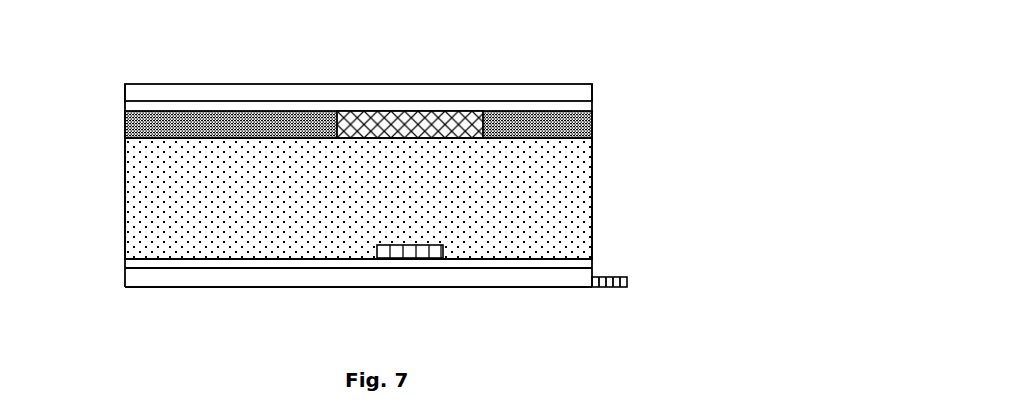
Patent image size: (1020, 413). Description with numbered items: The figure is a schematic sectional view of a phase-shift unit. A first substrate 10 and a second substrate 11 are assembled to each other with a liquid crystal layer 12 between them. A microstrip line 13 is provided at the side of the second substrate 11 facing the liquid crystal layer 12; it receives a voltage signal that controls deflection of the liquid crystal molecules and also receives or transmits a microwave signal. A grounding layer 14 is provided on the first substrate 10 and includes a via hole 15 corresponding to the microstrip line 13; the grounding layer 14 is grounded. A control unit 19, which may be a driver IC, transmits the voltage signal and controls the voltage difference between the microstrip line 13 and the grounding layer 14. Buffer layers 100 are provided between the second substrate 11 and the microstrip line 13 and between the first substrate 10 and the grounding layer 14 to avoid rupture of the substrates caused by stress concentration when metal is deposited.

The buffer layer 100 is at (78, 186).
The first substrate 10 is at (592, 92).
The grounding layer 14 is at (592, 129).
The via hole 15 is at (402, 123).
The liquid crystal layer 12 is at (592, 195).
The microstrip line 13 is at (443, 252).
The second substrate 11 is at (532, 287).
The control unit 19 is at (627, 277).